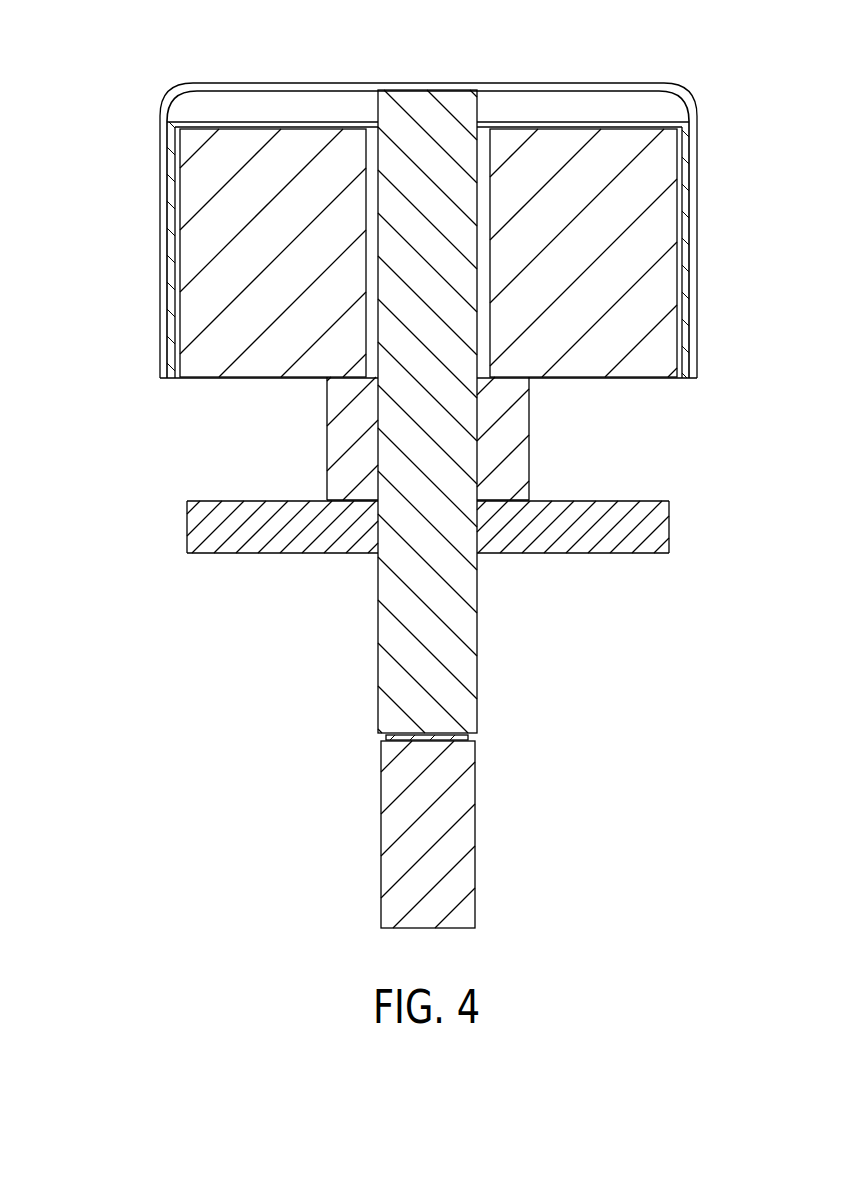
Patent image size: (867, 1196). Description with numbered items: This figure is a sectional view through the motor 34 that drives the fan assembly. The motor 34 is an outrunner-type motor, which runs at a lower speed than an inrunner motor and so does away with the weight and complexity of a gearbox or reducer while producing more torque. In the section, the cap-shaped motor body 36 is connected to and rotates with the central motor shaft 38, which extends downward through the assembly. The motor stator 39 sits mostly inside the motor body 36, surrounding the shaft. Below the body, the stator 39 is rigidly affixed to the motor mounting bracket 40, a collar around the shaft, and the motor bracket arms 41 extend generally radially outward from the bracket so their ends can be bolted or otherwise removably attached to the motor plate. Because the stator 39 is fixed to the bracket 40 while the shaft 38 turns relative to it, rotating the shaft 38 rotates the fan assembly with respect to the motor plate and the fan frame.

The motor 34 is at (142, 325).
The motor body 36 is at (680, 91).
The motor shaft 38 is at (460, 685).
The motor stator 39 is at (642, 370).
The motor mounting bracket 40 is at (520, 430).
The motor bracket arms 41 is at (655, 527).